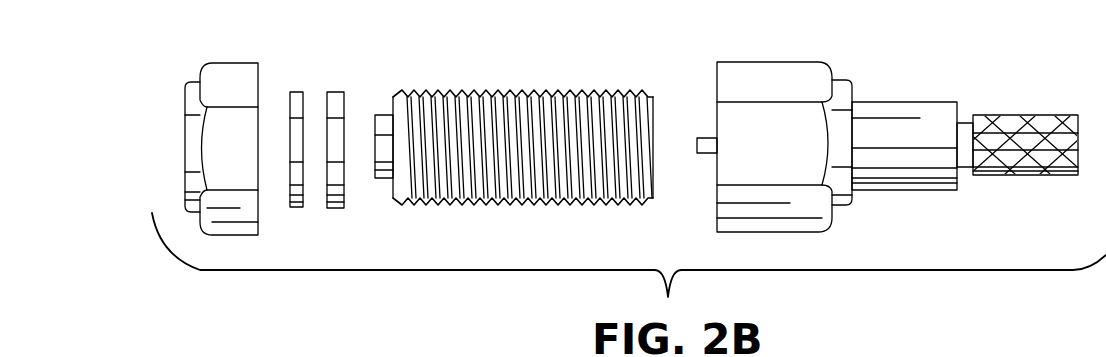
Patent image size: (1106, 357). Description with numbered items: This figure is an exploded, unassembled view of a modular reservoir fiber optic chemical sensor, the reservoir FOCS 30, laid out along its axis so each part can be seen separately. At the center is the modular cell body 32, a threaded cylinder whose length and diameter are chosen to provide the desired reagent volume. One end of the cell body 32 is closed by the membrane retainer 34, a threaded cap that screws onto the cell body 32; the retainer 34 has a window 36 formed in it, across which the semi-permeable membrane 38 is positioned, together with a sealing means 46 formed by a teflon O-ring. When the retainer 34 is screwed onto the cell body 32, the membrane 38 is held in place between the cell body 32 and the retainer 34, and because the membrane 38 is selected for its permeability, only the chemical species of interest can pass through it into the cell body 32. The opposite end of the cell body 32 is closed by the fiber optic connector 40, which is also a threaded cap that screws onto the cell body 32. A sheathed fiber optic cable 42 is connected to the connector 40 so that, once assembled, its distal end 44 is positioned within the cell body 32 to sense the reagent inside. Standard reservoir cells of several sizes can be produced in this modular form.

The reservoir FOCS 30 is at (522, 38).
The modular cell body 32 is at (517, 207).
The membrane retainer 34 is at (188, 80).
The window 36 is at (174, 150).
The semi-permeable membrane 38 is at (297, 90).
The fiber optic connector 40 is at (766, 62).
The sheathed fiber optic cable 42 is at (1048, 115).
The distal end 44 is at (707, 135).
The sealing means 46 is at (342, 90).